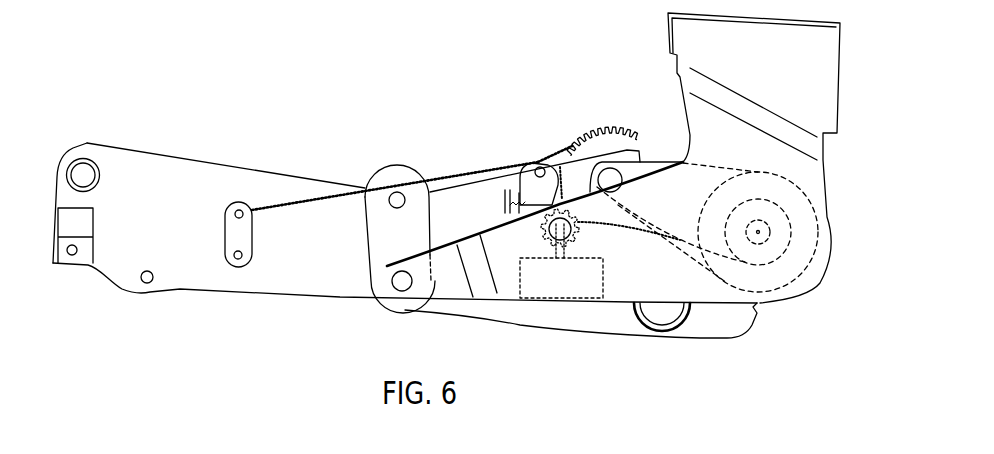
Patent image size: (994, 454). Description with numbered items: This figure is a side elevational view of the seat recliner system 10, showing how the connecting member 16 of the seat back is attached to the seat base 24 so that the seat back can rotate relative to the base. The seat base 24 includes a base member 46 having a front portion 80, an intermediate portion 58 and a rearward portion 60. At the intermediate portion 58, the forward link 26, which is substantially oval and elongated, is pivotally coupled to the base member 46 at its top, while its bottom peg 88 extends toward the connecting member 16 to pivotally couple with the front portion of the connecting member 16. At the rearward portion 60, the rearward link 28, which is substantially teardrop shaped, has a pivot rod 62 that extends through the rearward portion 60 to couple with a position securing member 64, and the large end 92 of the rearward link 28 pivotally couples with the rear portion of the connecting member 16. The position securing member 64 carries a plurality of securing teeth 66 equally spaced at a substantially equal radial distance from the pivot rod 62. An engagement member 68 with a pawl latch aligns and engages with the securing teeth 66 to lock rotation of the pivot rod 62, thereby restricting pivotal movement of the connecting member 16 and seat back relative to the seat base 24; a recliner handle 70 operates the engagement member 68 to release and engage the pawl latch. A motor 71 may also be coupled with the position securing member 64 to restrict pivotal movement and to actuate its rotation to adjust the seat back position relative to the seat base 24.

The seat recliner system 10 is at (136, 60).
The seat base 24 is at (285, 128).
The front portion 80 is at (113, 173).
The base member 46 is at (213, 187).
The intermediate portion 58 is at (350, 220).
The connecting member 16 is at (497, 248).
The engagement member 68 is at (536, 160).
The rearward portion 60 is at (571, 172).
The securing teeth 66 is at (584, 128).
The position securing member 64 is at (635, 145).
The recliner handle 70 is at (227, 243).
The forward link 26 is at (383, 238).
The bottom peg 88 is at (400, 283).
The motor 71 is at (520, 285).
The pivot rod 62 is at (615, 185).
The rearward link 28 is at (676, 242).
The large end 92 is at (793, 240).